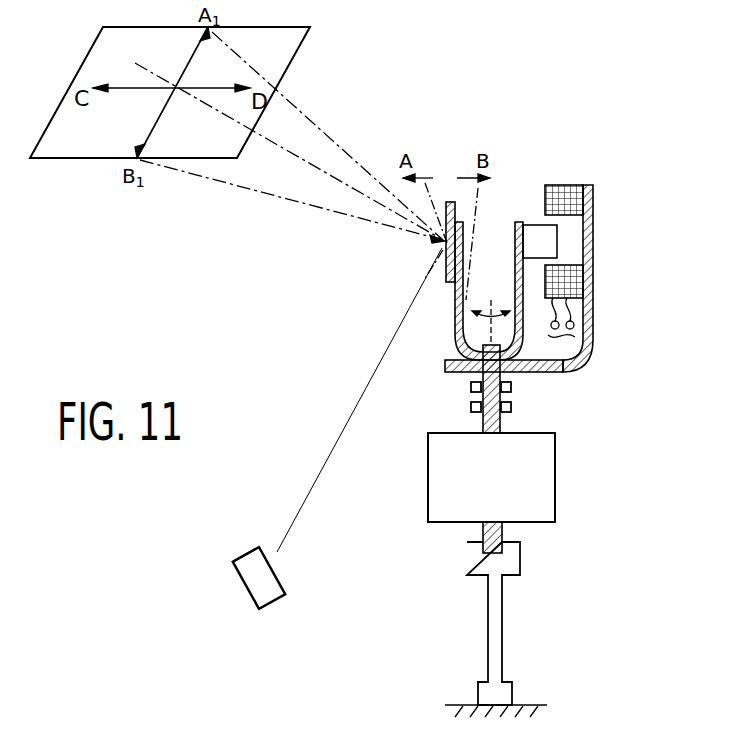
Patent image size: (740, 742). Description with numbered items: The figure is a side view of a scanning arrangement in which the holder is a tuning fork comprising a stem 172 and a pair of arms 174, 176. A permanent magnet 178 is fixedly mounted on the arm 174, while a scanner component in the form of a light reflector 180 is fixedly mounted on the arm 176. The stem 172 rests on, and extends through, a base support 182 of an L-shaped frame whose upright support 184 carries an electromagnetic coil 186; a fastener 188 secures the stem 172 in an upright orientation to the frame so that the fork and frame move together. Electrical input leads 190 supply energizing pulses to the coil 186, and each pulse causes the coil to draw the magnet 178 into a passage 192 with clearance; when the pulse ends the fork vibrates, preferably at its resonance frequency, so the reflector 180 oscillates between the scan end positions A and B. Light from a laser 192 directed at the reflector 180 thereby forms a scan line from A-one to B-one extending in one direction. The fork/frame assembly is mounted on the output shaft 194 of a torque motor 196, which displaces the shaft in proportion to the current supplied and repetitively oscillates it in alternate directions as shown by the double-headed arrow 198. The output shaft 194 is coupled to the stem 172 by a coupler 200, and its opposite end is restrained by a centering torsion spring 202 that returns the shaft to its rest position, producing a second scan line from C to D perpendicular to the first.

The stem 172 is at (471, 381).
The arm 174 is at (518, 222).
The arm 176 is at (457, 299).
The permanent magnet 178 is at (537, 243).
The light reflector 180 is at (448, 200).
The base support 182 is at (573, 373).
The upright support 184 is at (593, 201).
The electromagnetic coil 186 is at (572, 187).
The fastener 188 is at (512, 389).
The electrical input leads 190 is at (592, 350).
The laser 192 is at (268, 574).
The output shaft 194 is at (483, 428).
The motor 196 is at (440, 495).
The double-headed arrow 198 is at (488, 297).
The coupler 200 is at (512, 412).
The centering torsion spring 202 is at (493, 617).